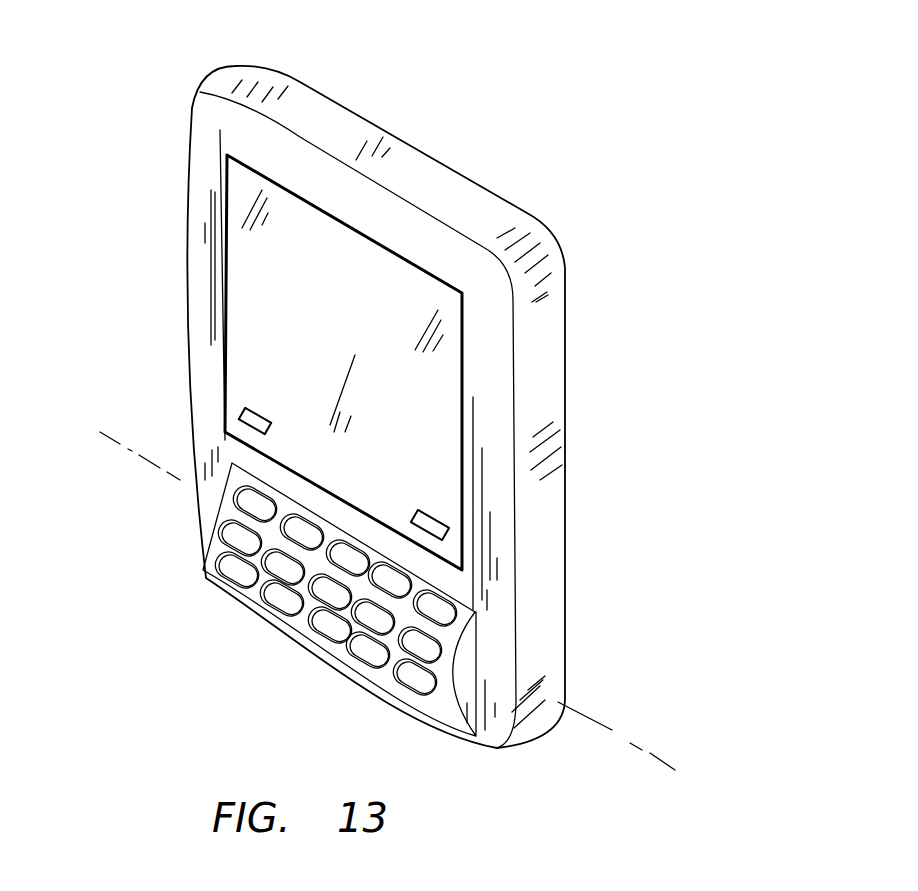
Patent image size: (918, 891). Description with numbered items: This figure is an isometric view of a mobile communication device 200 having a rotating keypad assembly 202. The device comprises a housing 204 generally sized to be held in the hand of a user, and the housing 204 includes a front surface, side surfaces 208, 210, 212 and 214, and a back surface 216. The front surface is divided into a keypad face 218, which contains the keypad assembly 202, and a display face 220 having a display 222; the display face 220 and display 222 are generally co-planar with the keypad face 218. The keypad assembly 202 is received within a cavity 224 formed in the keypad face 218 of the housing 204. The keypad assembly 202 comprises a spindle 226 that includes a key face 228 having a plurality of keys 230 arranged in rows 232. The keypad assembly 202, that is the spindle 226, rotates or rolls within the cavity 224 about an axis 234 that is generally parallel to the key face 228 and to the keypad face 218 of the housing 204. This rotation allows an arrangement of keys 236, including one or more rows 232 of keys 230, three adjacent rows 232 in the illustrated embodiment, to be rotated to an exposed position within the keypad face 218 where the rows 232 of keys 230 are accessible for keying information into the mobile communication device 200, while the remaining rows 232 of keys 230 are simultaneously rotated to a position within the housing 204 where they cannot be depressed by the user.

The mobile communication device 200 is at (562, 150).
The keypad assembly 202 is at (463, 657).
The housing 204 is at (558, 350).
The side surface 208 is at (548, 502).
The side surface 210 is at (430, 167).
The side surface 212 is at (187, 190).
The side surface 214 is at (307, 658).
The back surface 216 is at (563, 607).
The keypad face 218 is at (197, 443).
The display face 220 is at (197, 248).
The display 222 is at (292, 207).
The cavity 224 is at (463, 657).
The spindle 226 is at (497, 748).
The key face 228 is at (437, 708).
The keys 230 is at (400, 682).
The rows 232 is at (220, 570).
The axis 234 is at (612, 730).
The arrangement of keys 236 is at (277, 574).